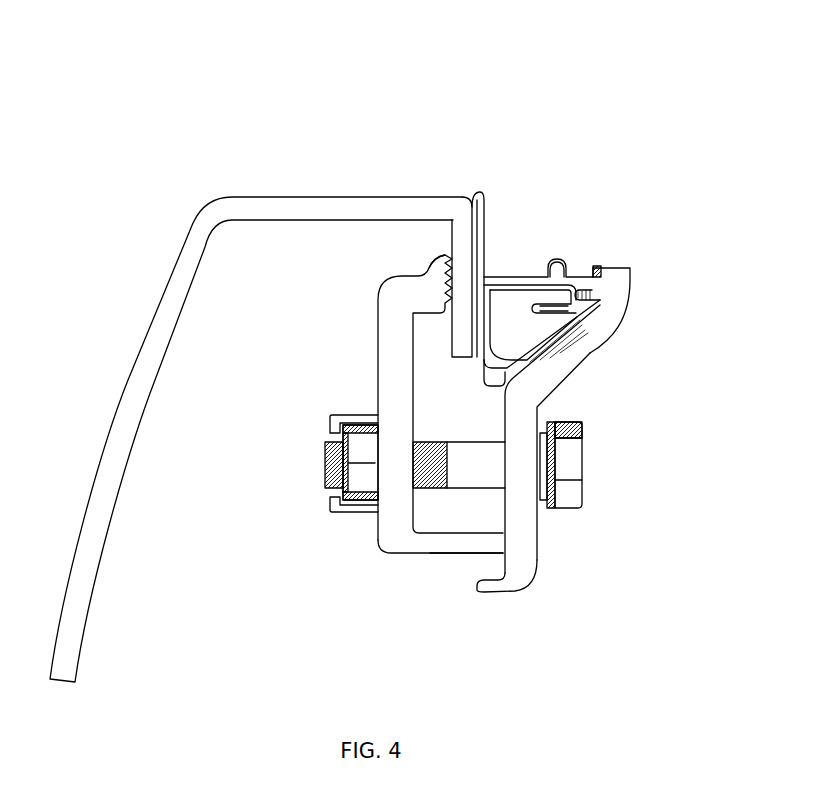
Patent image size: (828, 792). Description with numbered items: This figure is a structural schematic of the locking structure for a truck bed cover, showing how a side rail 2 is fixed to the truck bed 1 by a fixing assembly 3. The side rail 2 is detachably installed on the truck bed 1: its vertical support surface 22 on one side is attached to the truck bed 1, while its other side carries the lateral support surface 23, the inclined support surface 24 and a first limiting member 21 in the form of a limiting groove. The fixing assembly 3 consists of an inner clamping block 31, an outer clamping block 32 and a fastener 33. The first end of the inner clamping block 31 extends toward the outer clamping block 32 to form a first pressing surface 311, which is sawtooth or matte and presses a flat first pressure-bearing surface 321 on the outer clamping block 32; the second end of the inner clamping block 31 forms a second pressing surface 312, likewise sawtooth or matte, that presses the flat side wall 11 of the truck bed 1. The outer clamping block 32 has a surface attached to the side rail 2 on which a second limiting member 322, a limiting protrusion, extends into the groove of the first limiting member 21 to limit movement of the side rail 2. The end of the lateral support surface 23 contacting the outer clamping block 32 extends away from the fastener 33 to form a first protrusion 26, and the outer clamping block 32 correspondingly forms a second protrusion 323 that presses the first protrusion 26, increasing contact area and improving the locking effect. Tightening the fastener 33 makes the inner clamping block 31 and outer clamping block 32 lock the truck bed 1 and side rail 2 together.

The truck bed 1 is at (320, 205).
The side wall 11 is at (452, 237).
The side rail 2 is at (565, 236).
The first limiting member 21 is at (616, 272).
The vertical support surface 22 is at (483, 240).
The lateral support surface 23 is at (522, 283).
The inclined support surface 24 is at (542, 344).
The first protrusion 26 is at (595, 267).
The fixing assembly 3 is at (435, 606).
The inner clamping block 31 is at (382, 368).
The first pressing surface 311 is at (498, 547).
The second pressing surface 312 is at (428, 262).
The outer clamping block 32 is at (587, 360).
The first pressure-bearing surface 321 is at (510, 543).
The second limiting member 322 is at (601, 298).
The second protrusion 323 is at (622, 277).
The fastener 33 is at (570, 465).